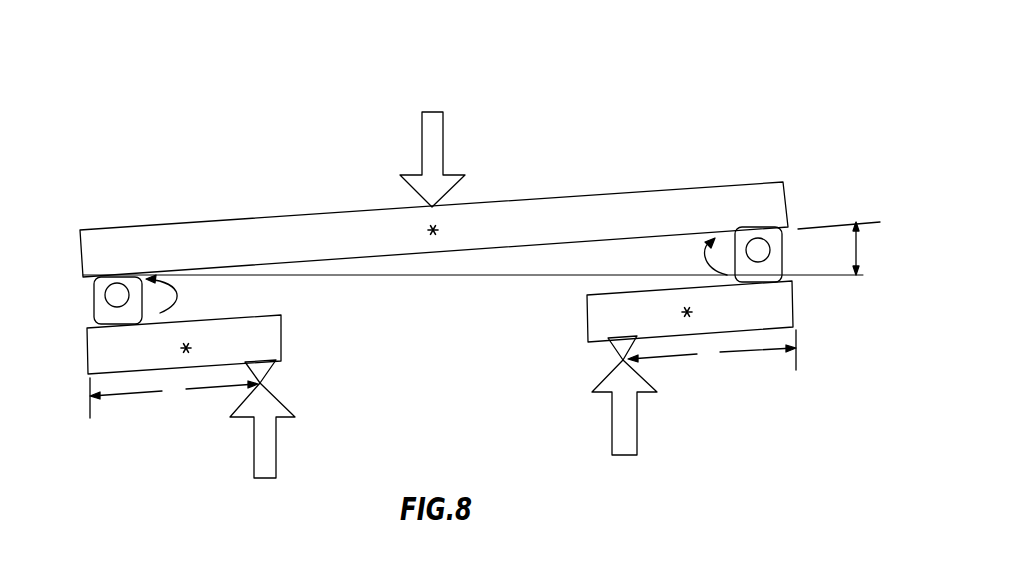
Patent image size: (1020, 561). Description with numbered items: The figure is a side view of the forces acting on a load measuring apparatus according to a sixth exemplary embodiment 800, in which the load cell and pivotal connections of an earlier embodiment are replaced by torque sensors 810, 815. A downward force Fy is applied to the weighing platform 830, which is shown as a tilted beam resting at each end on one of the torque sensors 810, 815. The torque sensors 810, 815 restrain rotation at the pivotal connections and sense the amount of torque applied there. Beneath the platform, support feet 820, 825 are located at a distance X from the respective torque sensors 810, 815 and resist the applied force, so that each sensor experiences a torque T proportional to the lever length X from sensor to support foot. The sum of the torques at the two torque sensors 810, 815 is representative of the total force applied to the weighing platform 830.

The sixth exemplary embodiment 800 is at (761, 90).
The torque sensor 810 is at (97, 312).
The torque sensor 815 is at (778, 260).
The support foot 820 is at (273, 378).
The support foot 825 is at (613, 352).
The weighing platform 830 is at (553, 208).